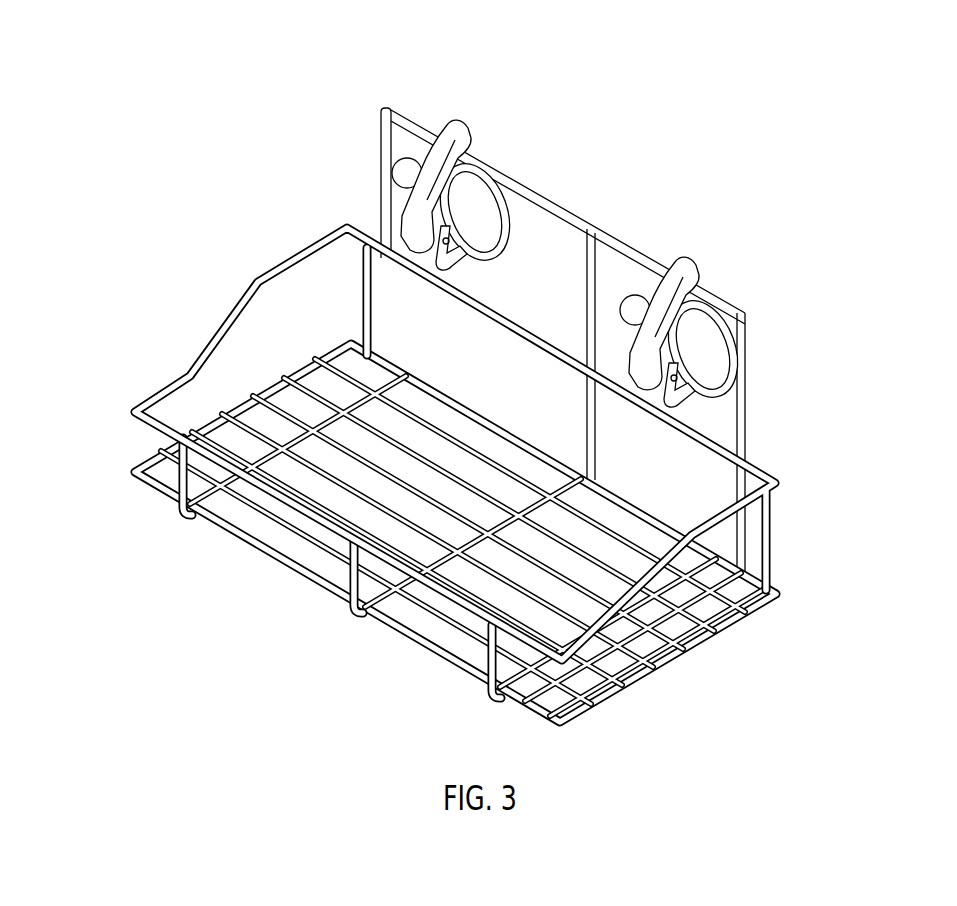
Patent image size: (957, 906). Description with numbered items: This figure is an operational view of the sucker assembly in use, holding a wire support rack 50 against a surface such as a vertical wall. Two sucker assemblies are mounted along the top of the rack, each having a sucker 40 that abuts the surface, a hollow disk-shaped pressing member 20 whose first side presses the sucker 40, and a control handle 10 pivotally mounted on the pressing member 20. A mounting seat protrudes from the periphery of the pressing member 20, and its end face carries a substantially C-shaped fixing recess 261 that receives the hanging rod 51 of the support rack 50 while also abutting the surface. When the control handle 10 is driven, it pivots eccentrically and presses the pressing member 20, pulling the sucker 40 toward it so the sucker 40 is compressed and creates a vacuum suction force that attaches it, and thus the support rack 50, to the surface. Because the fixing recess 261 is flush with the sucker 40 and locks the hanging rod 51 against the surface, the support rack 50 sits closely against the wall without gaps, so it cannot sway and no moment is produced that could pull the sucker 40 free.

The control handle 10 is at (393, 223).
The pressing member 20 is at (713, 372).
The sucker 40 is at (730, 326).
The support rack 50 is at (735, 656).
The hanging rod 51 is at (588, 225).
The fixing recess 261 is at (387, 110).